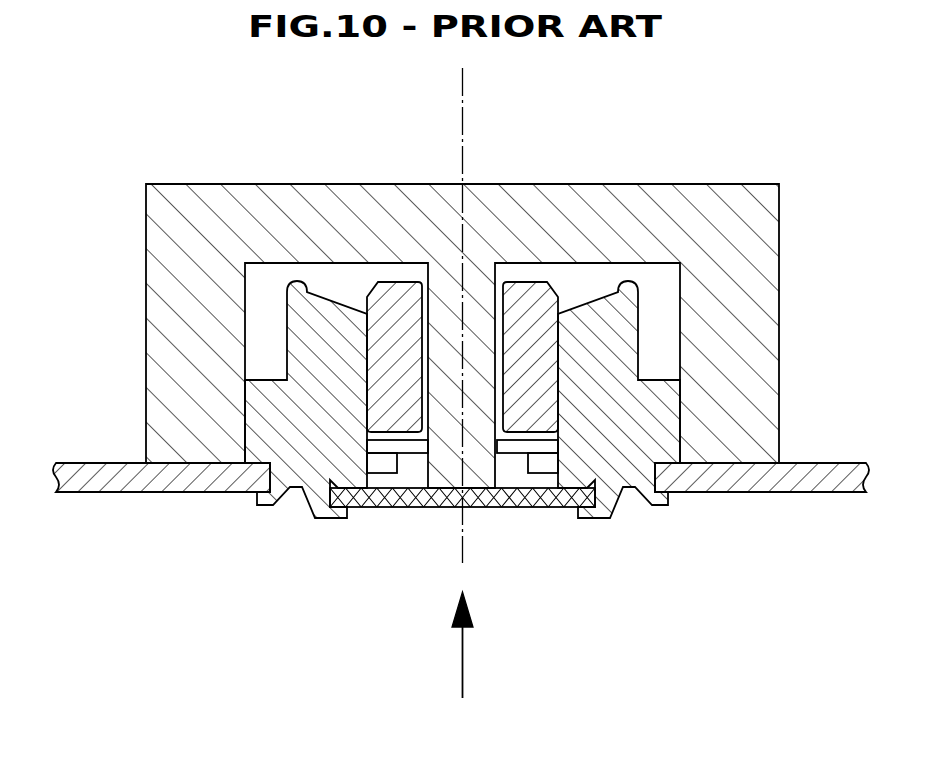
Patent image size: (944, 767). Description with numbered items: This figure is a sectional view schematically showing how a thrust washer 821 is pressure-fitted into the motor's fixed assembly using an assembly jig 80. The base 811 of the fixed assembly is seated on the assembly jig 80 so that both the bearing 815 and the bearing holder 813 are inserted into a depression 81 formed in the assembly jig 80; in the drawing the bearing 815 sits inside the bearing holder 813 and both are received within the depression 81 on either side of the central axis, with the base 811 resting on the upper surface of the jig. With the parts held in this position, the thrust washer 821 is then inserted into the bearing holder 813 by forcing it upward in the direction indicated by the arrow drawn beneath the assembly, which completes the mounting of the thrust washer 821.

The assembly jig 80 is at (359, 203).
The depression 81 is at (280, 288).
The base 811 is at (815, 492).
The bearing holder 813 is at (629, 430).
The bearing 815 is at (533, 297).
The thrust washer 821 is at (517, 507).